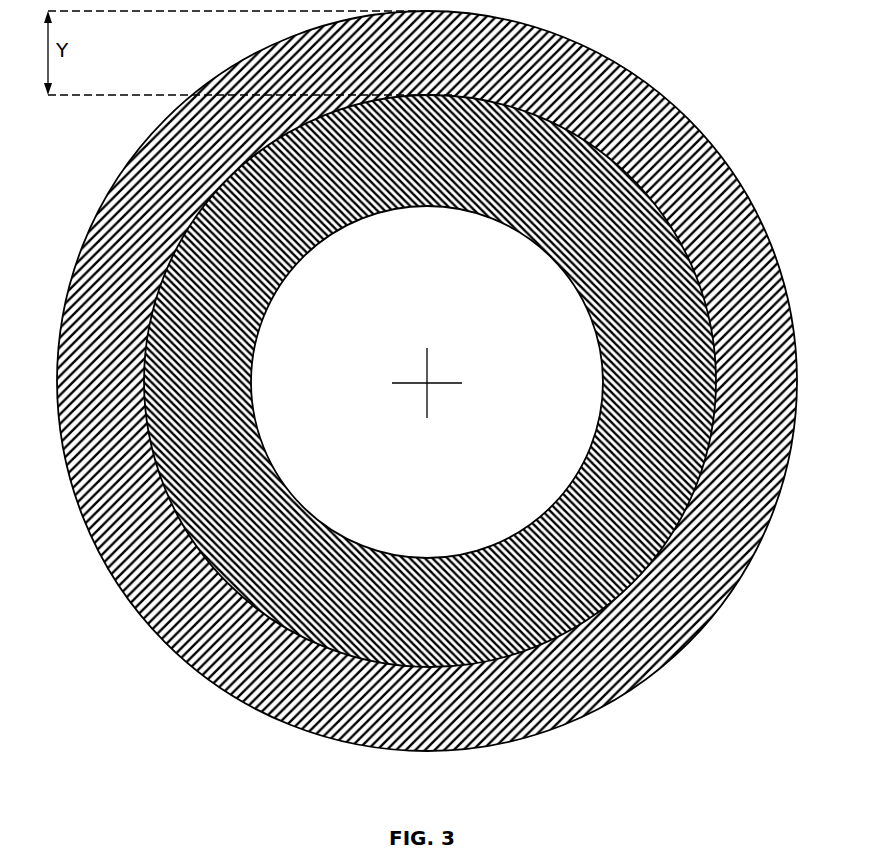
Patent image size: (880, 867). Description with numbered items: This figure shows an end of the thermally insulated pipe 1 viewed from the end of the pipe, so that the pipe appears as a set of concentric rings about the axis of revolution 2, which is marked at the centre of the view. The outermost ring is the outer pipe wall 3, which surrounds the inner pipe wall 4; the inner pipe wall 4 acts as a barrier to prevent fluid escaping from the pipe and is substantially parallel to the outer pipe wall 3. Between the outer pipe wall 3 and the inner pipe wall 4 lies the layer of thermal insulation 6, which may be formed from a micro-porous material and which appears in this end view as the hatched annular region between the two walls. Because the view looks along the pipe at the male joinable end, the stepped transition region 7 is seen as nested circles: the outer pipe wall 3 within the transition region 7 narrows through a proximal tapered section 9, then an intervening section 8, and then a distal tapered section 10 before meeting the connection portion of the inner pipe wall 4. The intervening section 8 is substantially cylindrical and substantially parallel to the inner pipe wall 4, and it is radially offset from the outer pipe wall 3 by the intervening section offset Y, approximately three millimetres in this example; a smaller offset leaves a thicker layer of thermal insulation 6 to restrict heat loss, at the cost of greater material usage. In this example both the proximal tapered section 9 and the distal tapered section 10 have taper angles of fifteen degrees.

The thermally insulated pipe 1 is at (429, 380).
The axis of revolution 2 is at (425, 385).
The outer pipe wall 3 is at (712, 610).
The inner pipe wall 4 is at (418, 382).
The layer of thermal insulation 6 is at (429, 381).
The transition region 7 is at (240, 238).
The intervening section 8 is at (207, 573).
The proximal tapered section 9 is at (127, 217).
The distal tapered section 10 is at (233, 443).